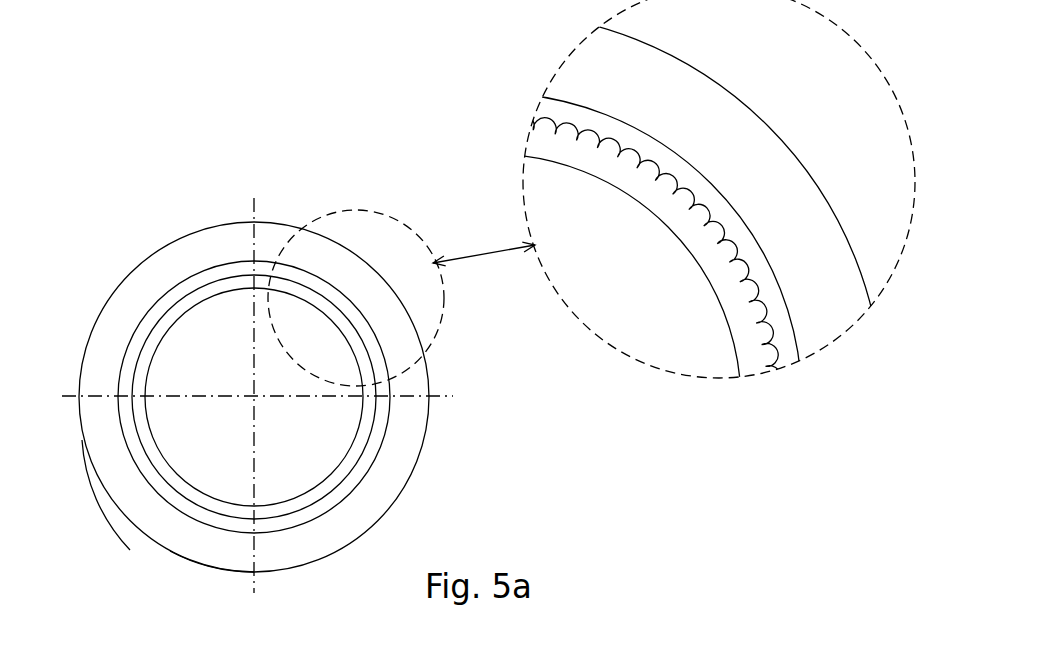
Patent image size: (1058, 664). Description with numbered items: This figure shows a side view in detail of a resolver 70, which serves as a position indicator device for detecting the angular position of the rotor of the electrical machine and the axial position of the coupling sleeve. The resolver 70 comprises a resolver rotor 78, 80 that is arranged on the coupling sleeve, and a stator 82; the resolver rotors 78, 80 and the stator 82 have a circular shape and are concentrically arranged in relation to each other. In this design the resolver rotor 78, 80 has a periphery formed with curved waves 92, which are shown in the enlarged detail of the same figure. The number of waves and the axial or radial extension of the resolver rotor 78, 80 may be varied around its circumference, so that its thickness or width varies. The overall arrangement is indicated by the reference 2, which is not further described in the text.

The tubular body / device 2 is at (90, 534).
The resolver 70 is at (420, 501).
The resolver rotor 78 is at (170, 290).
The resolver rotor 80 is at (254, 397).
The stator 82 is at (207, 552).
The curved waves 92 is at (609, 138).